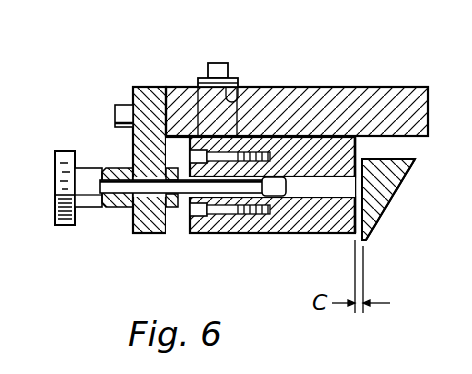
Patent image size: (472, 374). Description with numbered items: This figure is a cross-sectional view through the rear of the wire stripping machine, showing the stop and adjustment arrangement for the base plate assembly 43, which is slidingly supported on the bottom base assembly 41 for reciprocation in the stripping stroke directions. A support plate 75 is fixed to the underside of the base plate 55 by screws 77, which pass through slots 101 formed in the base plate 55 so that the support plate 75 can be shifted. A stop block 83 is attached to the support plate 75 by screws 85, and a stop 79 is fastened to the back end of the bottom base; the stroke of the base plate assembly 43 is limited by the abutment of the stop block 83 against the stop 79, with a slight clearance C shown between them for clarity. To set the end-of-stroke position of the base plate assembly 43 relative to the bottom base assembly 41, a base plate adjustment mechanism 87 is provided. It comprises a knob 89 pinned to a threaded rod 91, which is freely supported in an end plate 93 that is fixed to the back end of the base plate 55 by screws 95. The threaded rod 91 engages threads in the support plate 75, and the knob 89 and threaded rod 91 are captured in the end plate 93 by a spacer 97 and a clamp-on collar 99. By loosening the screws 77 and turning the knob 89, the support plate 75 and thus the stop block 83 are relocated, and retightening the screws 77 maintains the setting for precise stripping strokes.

The bottom base assembly 41 is at (408, 178).
The base plate assembly 43 is at (146, 239).
The base plate 55 is at (370, 96).
The support plate 75 is at (214, 222).
The screws 77 is at (222, 62).
The stop 79 is at (366, 230).
The stop block 83 is at (326, 226).
The screws 85 is at (262, 225).
The base plate adjustment mechanism 87 is at (118, 244).
The knob 89 is at (62, 176).
The threaded rod 91 is at (118, 176).
The end plate 93 is at (153, 93).
The screws 95 is at (116, 107).
The spacer 97 is at (117, 208).
The clamp-on collar 99 is at (176, 205).
The slots 101 is at (240, 77).